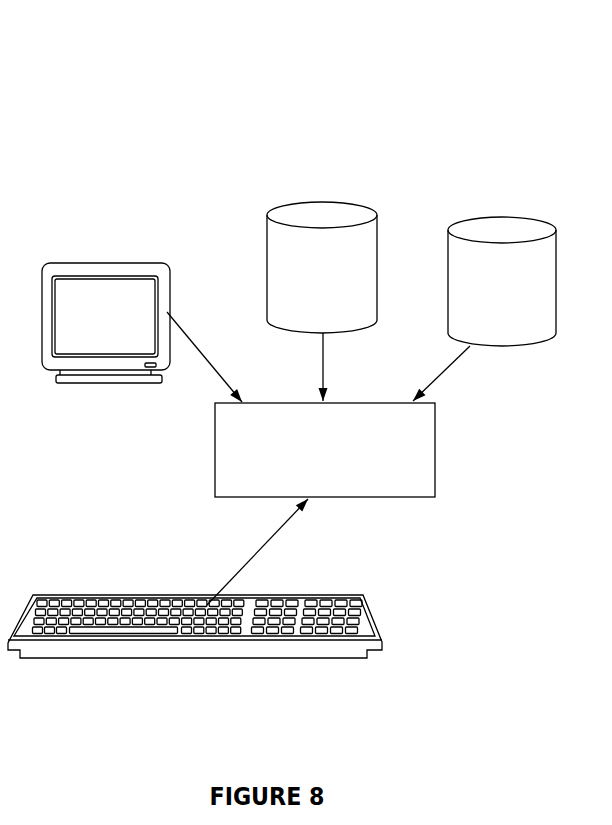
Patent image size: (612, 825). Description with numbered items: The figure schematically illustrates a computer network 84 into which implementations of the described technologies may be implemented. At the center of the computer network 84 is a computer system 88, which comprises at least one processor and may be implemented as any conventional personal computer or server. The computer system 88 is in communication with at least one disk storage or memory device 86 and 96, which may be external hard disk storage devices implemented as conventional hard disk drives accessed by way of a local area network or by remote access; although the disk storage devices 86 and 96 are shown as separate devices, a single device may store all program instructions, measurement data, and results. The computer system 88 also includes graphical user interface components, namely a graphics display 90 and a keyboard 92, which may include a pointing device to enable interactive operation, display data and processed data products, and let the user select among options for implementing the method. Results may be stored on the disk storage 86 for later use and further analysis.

The computer network 84 is at (112, 135).
The disk storage device 86 is at (340, 202).
The computer system 88 is at (400, 497).
The graphics display 90 is at (107, 262).
The keyboard 92 is at (250, 658).
The disk storage device 96 is at (486, 215).